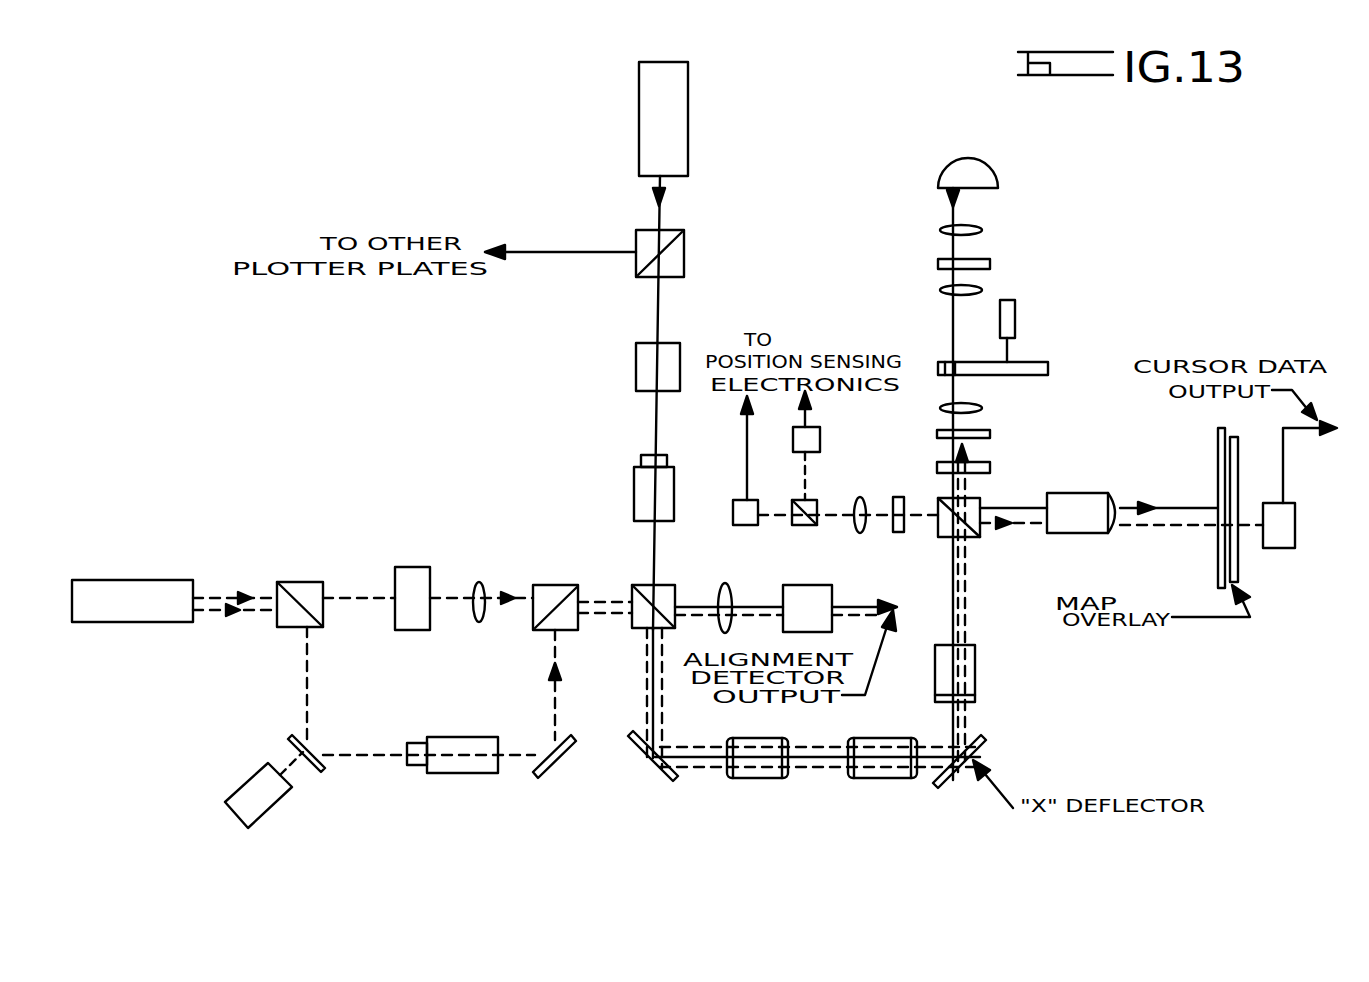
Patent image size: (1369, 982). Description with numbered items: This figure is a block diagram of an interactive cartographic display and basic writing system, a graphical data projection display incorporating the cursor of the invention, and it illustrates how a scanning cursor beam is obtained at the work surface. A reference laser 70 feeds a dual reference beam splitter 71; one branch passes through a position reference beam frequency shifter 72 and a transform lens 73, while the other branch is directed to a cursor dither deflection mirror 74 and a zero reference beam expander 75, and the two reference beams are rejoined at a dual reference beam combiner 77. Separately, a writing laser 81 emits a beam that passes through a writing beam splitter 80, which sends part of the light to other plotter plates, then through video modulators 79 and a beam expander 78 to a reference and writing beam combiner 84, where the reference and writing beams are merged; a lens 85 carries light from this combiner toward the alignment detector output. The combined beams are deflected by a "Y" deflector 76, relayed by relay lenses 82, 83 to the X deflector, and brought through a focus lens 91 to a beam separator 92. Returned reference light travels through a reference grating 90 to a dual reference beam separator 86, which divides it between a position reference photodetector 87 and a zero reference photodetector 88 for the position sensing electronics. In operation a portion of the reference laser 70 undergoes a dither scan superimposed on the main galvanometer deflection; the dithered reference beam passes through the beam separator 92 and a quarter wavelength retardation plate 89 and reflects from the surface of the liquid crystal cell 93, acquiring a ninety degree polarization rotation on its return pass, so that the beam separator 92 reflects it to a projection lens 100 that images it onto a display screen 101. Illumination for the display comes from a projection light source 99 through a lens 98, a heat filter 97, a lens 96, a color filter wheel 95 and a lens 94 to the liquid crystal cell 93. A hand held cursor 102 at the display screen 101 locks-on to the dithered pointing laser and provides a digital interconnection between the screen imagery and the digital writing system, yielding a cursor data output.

The reference laser 70 is at (93, 622).
The dual reference beam splitter 71 is at (305, 582).
The position reference beam frequency shifter 72 is at (412, 567).
The transform lens 73 is at (472, 617).
The cursor dither deflection mirror 74 is at (262, 808).
The zero reference beam expander 75 is at (455, 773).
The "Y" deflector 76 is at (670, 782).
The dual reference beam combiner 77 is at (560, 585).
The beam expander 78 is at (633, 500).
The video modulators 79 is at (636, 370).
The writing beam splitter 80 is at (686, 258).
The writing laser 81 is at (690, 155).
The relay lens 82 is at (747, 780).
The relay lens 83 is at (878, 780).
The reference and writing beam combiner 84 is at (640, 630).
The lens 85 is at (736, 590).
The dual reference beam separator 86 is at (805, 527).
The position reference photodetector 87 is at (733, 510).
The zero reference photodetector 88 is at (793, 437).
The quarter wavelength retardation plate 89 is at (992, 468).
The reference grating 90 is at (897, 535).
The focus lens 91 is at (977, 677).
The beam separator 92 is at (975, 540).
The liquid crystal cell 93 is at (992, 434).
The lens 94 is at (984, 406).
The color filter wheel 95 is at (1030, 362).
The lens 96 is at (984, 288).
The heat filter 97 is at (992, 263).
The lens 98 is at (984, 228).
The projection light source 99 is at (1000, 172).
The projection lens 100 is at (1088, 493).
The display screen 101 is at (1216, 447).
The cursor 102 is at (1295, 565).